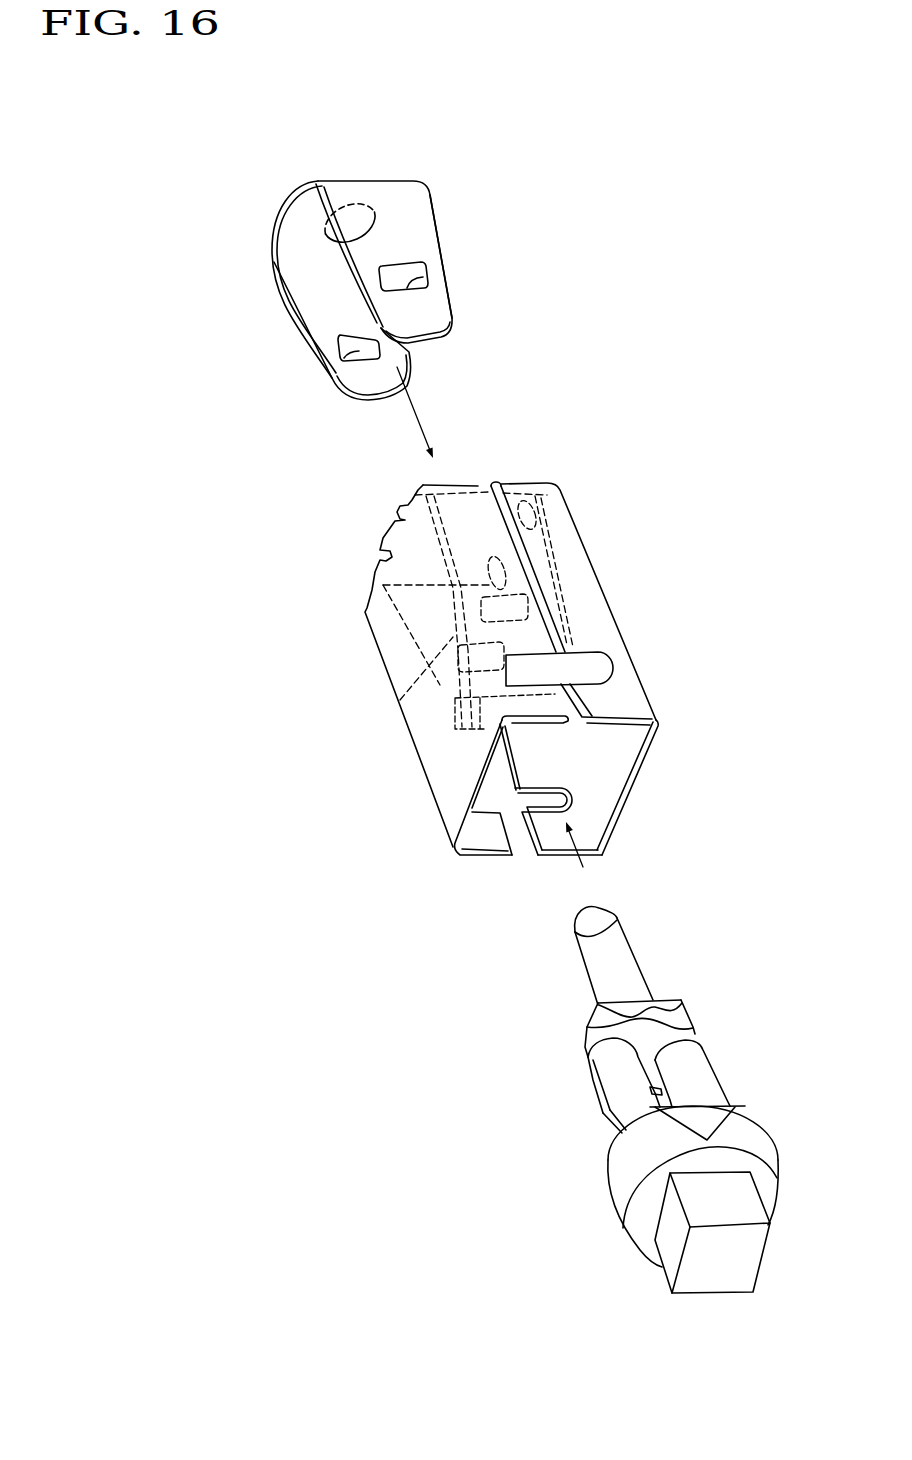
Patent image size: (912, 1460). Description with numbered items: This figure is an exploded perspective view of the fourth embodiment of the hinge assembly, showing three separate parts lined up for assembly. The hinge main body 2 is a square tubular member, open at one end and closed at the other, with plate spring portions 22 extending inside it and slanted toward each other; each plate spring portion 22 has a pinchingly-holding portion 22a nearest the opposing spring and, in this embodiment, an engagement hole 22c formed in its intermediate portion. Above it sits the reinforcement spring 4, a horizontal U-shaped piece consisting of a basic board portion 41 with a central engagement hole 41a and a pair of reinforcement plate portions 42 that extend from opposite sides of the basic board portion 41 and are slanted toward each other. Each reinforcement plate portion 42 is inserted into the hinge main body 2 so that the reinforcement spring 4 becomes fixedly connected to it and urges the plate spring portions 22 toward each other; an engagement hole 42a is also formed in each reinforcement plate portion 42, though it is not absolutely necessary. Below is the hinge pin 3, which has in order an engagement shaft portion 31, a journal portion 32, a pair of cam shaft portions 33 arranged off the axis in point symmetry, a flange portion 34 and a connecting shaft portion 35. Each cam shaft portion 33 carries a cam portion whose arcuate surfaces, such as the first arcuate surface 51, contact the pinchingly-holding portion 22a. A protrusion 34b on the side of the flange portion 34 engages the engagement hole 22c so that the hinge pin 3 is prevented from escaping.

The hinge main body 2 is at (375, 657).
The plate spring portion 22 is at (553, 551).
The pinchingly-holding portion 22a is at (460, 732).
The engagement hole 22c is at (532, 603).
The hinge pin 3 is at (627, 1103).
The engagement shaft portion 31 is at (660, 1270).
The journal portion 32 is at (617, 1203).
The cam shaft portion 33 is at (620, 1067).
The flange portion 34 is at (600, 1027).
The protrusion 34b is at (652, 1008).
The connecting shaft portion 35 is at (577, 962).
The first arcuate surface 51 is at (603, 1102).
The reinforcement spring 4 is at (283, 217).
The basic board portion 41 is at (332, 222).
The engagement hole 41a is at (341, 210).
The reinforcement plate portion 42 is at (438, 234).
The engagement hole 42a is at (415, 280).